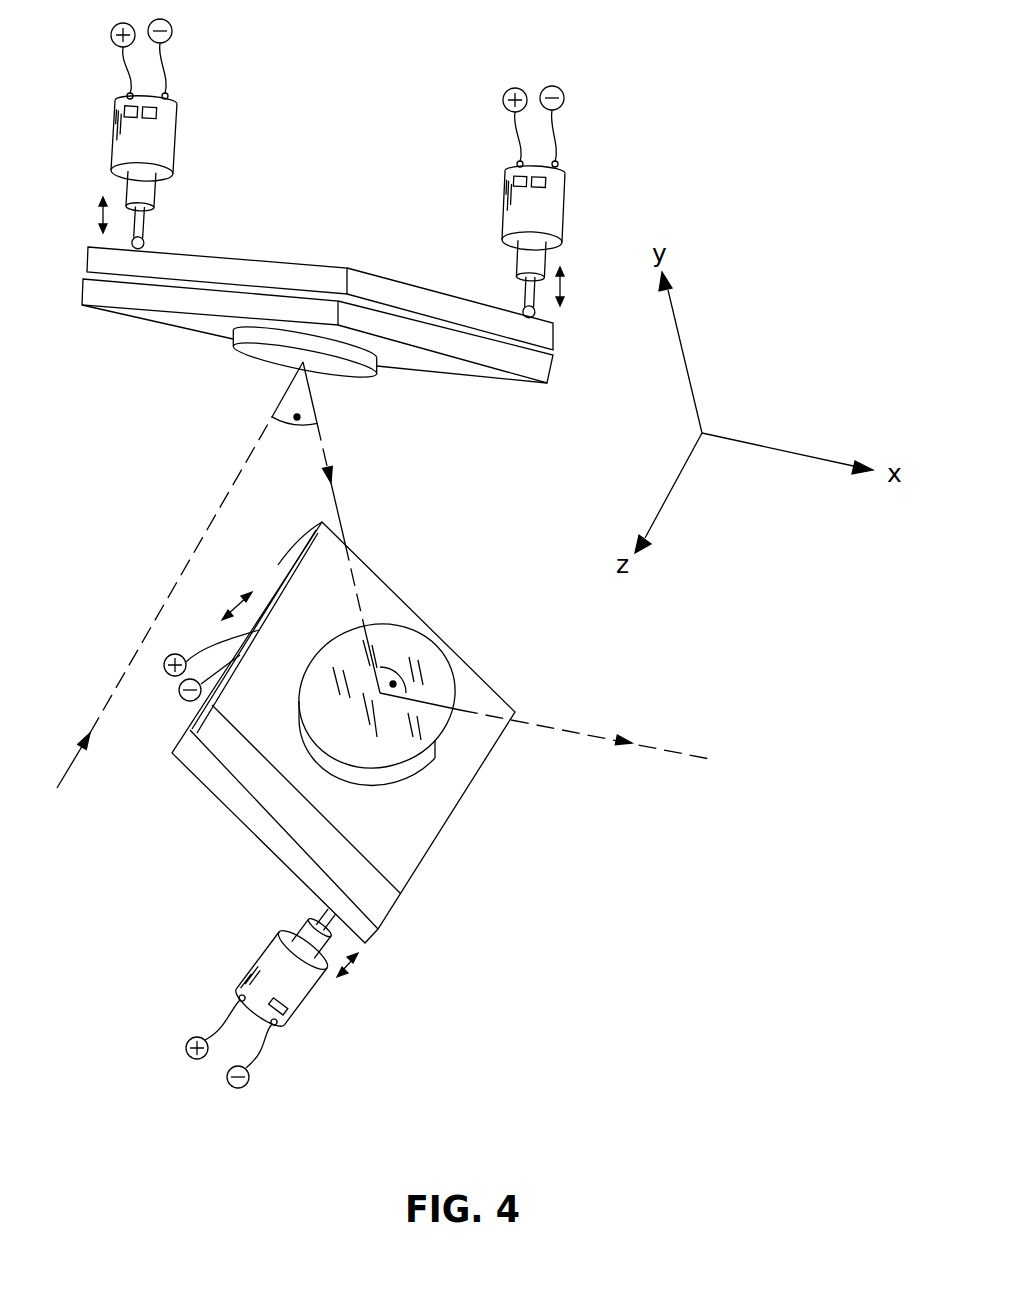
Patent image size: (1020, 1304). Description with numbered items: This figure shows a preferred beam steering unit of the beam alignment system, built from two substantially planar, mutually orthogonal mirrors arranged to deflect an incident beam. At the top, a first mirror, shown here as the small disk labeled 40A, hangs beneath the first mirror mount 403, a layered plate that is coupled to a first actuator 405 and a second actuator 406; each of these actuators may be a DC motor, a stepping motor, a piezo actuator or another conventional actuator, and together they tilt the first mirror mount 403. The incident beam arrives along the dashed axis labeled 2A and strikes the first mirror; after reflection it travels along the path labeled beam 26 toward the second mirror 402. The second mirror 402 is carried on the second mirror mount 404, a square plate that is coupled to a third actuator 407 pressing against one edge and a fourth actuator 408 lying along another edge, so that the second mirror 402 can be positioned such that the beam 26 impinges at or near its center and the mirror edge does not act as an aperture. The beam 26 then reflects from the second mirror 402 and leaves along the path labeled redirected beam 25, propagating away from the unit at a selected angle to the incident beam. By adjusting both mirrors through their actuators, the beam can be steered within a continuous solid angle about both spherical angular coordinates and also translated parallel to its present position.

The first actuator 405 is at (162, 152).
The second actuator 406 is at (555, 200).
The first mirror mount 403 is at (542, 367).
The mirror 40A is at (342, 367).
The incident beam axis 2A is at (228, 495).
The beam 26 is at (337, 500).
The fourth actuator 408 is at (215, 647).
The second mirror 402 is at (430, 675).
The redirected beam 25 is at (593, 733).
The second mirror mount 404 is at (407, 853).
The third actuator 407 is at (297, 983).